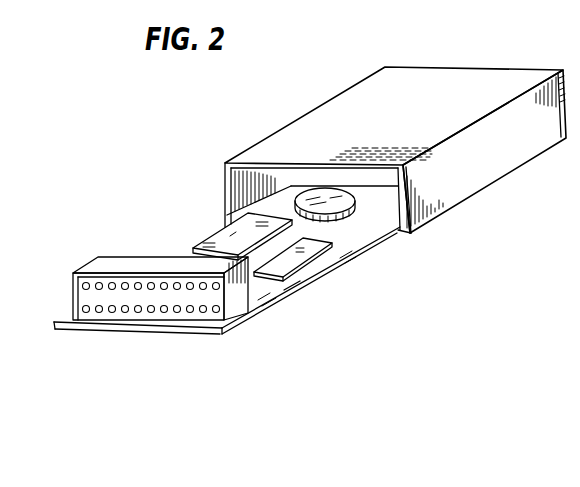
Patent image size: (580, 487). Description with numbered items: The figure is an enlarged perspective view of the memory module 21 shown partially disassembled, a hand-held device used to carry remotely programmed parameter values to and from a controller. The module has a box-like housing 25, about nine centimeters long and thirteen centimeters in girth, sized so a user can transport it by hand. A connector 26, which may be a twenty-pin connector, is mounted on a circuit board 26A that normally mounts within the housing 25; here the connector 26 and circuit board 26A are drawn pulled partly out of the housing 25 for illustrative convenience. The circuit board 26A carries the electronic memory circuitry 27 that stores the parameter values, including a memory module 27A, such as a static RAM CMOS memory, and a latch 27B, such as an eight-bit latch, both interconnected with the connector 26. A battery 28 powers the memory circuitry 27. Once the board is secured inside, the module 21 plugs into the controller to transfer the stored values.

The memory module 21 is at (402, 124).
The housing 25 is at (498, 178).
The connector 26 is at (208, 330).
The circuit board 26A is at (292, 286).
The electronic memory circuitry 27 is at (563, 138).
The memory module 27A is at (220, 240).
The latch 27B is at (306, 246).
The battery 28 is at (318, 190).